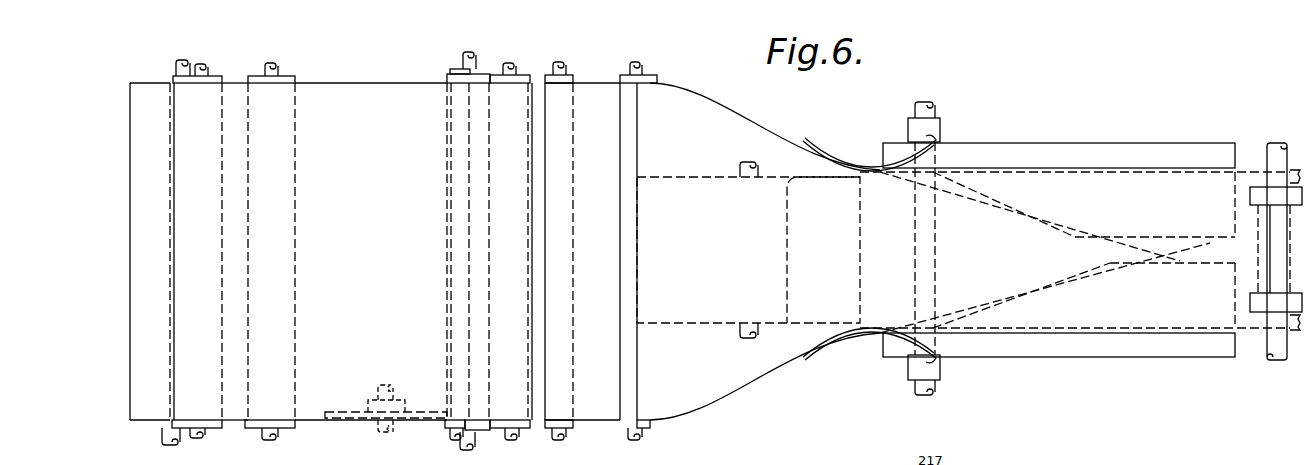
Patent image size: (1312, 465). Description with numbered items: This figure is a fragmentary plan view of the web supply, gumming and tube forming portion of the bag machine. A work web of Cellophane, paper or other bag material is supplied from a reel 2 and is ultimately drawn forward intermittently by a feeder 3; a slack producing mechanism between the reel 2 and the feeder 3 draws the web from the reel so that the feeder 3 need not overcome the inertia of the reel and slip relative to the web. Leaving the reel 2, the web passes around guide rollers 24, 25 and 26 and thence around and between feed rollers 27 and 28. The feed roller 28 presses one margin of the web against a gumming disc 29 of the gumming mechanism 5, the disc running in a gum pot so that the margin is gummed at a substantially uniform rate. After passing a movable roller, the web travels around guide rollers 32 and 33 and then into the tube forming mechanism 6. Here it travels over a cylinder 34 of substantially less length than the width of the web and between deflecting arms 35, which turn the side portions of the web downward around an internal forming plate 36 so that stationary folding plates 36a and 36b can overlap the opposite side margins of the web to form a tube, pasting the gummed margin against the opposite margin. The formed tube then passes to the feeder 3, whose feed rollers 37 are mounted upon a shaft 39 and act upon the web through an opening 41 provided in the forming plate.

The reel 2 is at (148, 92).
The feeder 3 is at (1258, 162).
The gumming mechanism 5 is at (358, 424).
The tube forming mechanism 6 is at (830, 136).
The guide roller 24 is at (290, 78).
The guide roller 25 is at (208, 78).
The guide roller 26 is at (432, 252).
The feed roller 27 is at (520, 76).
The feed roller 28 is at (480, 73).
The gumming disc 29 is at (342, 412).
The guide roller 32 is at (568, 78).
The guide roller 33 is at (655, 418).
The cylinder 34 is at (672, 330).
The deflecting arms 35 is at (853, 158).
The internal forming plate 36 is at (995, 172).
The stationary folding plate 36a is at (1045, 148).
The stationary folding plate 36b is at (1045, 350).
The feed rollers 37 is at (1250, 193).
The shaft 39 is at (1268, 263).
The opening 41 is at (1256, 220).